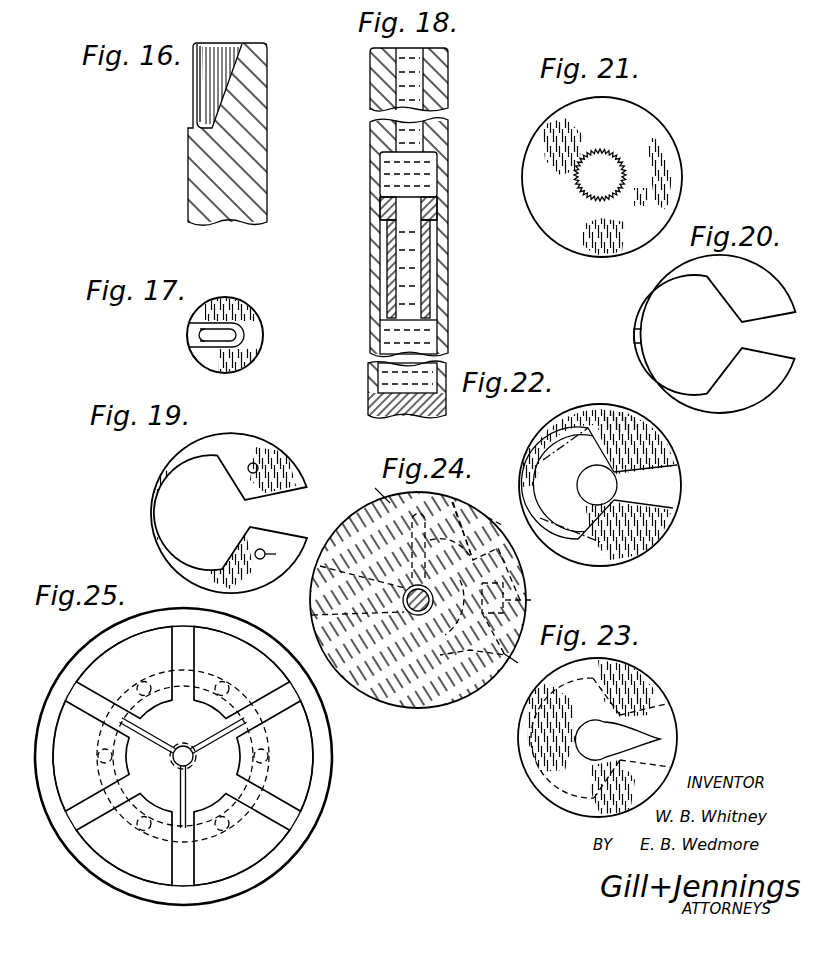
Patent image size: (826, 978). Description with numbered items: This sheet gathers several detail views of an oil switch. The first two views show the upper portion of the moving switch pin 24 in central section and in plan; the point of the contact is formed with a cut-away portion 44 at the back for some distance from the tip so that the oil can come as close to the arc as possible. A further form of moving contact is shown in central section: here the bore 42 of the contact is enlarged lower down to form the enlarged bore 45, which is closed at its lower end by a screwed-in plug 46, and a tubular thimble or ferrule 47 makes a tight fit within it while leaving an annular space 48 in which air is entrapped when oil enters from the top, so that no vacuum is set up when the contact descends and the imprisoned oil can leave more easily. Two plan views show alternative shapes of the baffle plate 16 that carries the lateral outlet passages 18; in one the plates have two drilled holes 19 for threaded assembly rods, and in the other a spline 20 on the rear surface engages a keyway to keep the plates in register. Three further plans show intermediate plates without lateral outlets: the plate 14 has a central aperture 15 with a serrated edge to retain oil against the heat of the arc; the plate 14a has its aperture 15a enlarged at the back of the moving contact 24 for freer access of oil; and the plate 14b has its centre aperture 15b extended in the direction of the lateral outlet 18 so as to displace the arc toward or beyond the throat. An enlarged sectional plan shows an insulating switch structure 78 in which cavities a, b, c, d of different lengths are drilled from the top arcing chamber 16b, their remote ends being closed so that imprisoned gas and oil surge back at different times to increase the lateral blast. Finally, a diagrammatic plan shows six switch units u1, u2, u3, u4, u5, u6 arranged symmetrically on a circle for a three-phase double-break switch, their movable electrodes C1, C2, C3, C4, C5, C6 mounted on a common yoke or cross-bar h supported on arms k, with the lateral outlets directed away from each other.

In FIG. 21, the baffle plate 14 is at (566, 248).
In FIG. 22, the plate 14a is at (657, 437).
In FIG. 23, the plate 14b is at (530, 782).
In FIG. 21, the central aperture 15 is at (601, 166).
In FIG. 22, the aperture 15a is at (543, 517).
In FIG. 23, the centre aperture 15b is at (588, 733).
In FIG. 20, the baffle plate 16 is at (678, 277).
In FIG. 19, the baffle plate 16 is at (160, 512).
In FIG. 24, the top arcing chamber 16b is at (453, 502).
In FIG. 22, the lateral outlet passage 18 is at (673, 468).
In FIG. 23, the lateral outlet passage 18 is at (643, 708).
In FIG. 19, the drilled holes 19 is at (258, 468).
In FIG. 20, the spline 20 is at (637, 331).
In FIG. 16, the movable switch pin 24 is at (248, 159).
In FIG. 17, the movable switch pin 24 is at (252, 334).
In FIG. 18, the movable switch pin 24 is at (372, 127).
In FIG. 22, the movable switch pin 24 is at (590, 483).
In FIG. 24, the movable switch pin 24 is at (410, 615).
In FIG. 18, the bore 42 is at (402, 66).
In FIG. 16, the cut-away portion 44 is at (205, 104).
In FIG. 17, the cut-away portion 44 is at (200, 333).
In FIG. 18, the enlarged bore 45 is at (386, 181).
In FIG. 18, the screwed-in plug 46 is at (382, 393).
In FIG. 18, the tubular thimble or ferrule 47 is at (392, 252).
In FIG. 18, the annular space 48 is at (432, 272).
In FIG. 24, the insulating switch structure 78 is at (457, 687).
In FIG. 24, the cavity a is at (375, 490).
In FIG. 24, the cavity b is at (497, 513).
In FIG. 24, the cavity c is at (525, 594).
In FIG. 24, the cavity d is at (515, 663).
In FIG. 25, the common yoke or cross-bar h is at (122, 700).
In FIG. 25, the arms k is at (192, 752).
In FIG. 25, the switch unit u1 is at (260, 842).
In FIG. 25, the switch unit u2 is at (303, 738).
In FIG. 25, the switch unit u3 is at (222, 645).
In FIG. 25, the switch unit u4 is at (107, 660).
In FIG. 25, the switch unit u5 is at (70, 708).
In FIG. 25, the switch unit u6 is at (120, 857).
In FIG. 25, the movable electrode C1 is at (223, 833).
In FIG. 25, the movable electrode C2 is at (268, 759).
In FIG. 25, the movable electrode C3 is at (232, 687).
In FIG. 25, the movable electrode C4 is at (145, 679).
In FIG. 25, the movable electrode C5 is at (103, 748).
In FIG. 25, the movable electrode C6 is at (138, 828).